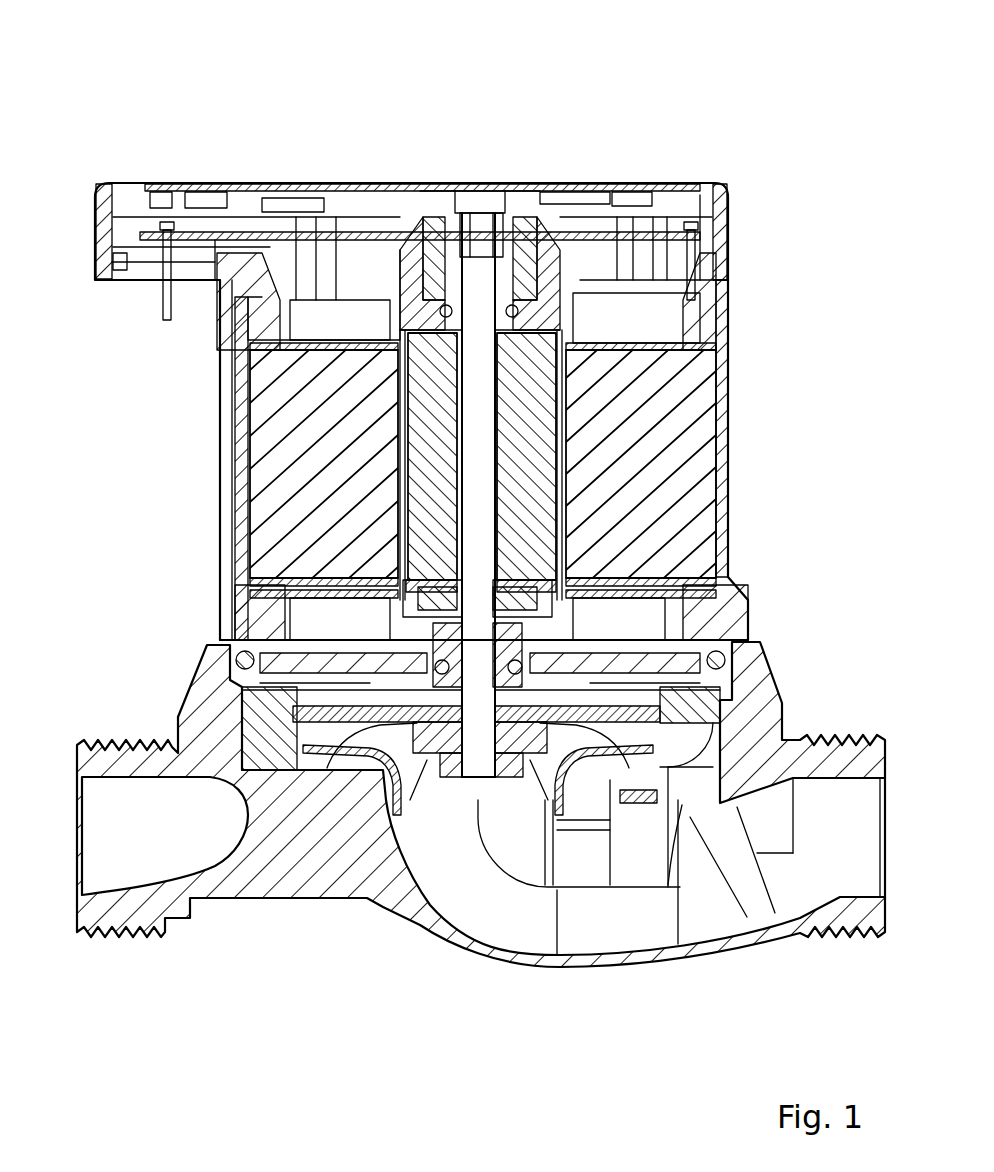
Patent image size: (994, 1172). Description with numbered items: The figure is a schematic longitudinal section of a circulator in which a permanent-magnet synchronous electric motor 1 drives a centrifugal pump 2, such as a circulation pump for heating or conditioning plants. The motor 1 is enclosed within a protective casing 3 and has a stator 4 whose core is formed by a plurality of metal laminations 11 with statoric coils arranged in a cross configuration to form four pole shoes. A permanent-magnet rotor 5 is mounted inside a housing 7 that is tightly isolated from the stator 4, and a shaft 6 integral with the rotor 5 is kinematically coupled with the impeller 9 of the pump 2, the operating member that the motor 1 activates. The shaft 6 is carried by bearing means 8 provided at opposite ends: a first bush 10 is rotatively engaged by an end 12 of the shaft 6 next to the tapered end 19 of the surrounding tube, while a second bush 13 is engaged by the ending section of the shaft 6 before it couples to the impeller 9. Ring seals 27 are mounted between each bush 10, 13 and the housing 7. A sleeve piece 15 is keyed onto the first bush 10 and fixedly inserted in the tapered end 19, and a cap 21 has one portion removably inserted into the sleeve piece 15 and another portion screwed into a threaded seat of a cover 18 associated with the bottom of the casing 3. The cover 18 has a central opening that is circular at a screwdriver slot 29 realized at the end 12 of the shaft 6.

The permanent-magnet synchronous electric motor 1 is at (152, 438).
The centrifugal pump 2 is at (268, 942).
The protective casing 3 is at (718, 328).
The stator 4 is at (667, 487).
The permanent-magnet rotor 5 is at (413, 438).
The shaft 6 is at (480, 462).
The housing 7 is at (410, 282).
The bearing means 8 is at (540, 215).
The impeller 9 is at (527, 695).
The first bush 10 is at (588, 186).
The metal laminations 11 is at (272, 505).
The end of the shaft 12 is at (655, 186).
The second bush 13 is at (435, 690).
The sleeve piece 15 is at (432, 215).
The cover 18 is at (108, 185).
The tapered end of the tube 19 is at (420, 268).
The cap 21 is at (508, 215).
The ring seals 27 is at (505, 650).
The screwdriver slot 29 is at (482, 200).